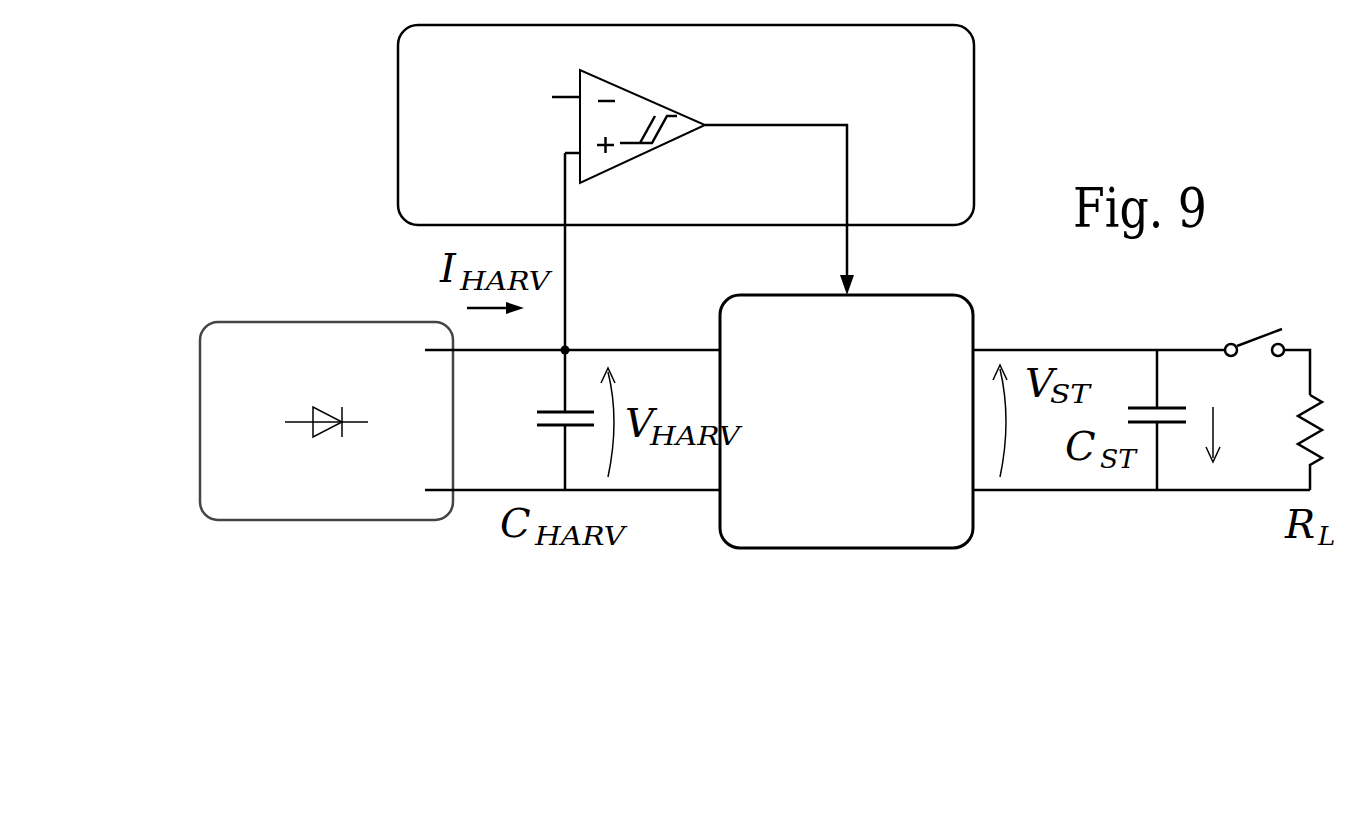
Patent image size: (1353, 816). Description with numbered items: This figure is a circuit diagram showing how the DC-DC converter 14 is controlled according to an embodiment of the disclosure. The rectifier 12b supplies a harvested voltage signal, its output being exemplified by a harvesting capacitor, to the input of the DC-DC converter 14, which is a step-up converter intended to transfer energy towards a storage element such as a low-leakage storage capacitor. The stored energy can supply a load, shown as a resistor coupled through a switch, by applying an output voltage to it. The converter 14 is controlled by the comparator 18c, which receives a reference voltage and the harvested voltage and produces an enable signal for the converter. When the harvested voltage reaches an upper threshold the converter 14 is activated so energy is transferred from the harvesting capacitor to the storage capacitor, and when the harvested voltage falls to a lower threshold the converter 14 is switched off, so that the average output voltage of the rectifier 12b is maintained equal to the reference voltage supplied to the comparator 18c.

The rectifier 12b is at (326, 445).
The DC-DC converter 14 is at (846, 445).
The comparator 18c is at (715, 160).